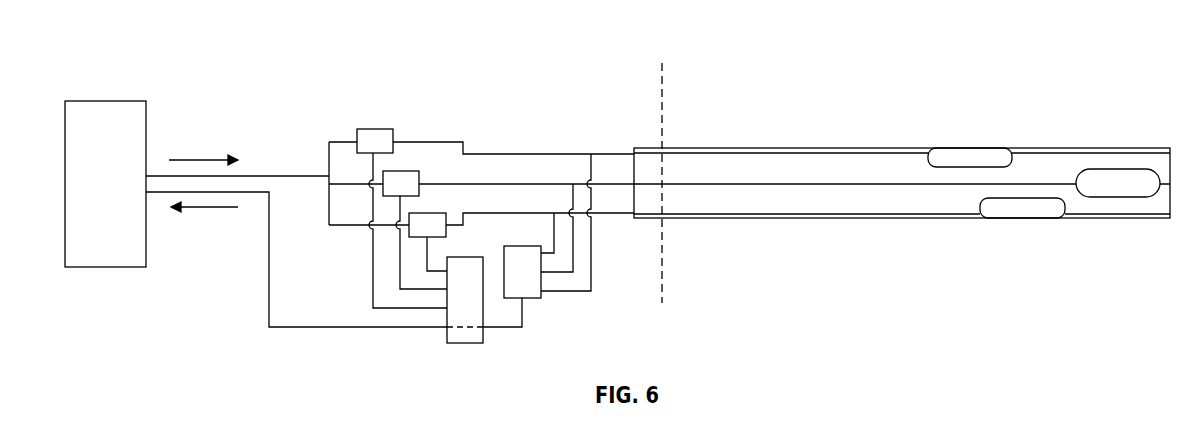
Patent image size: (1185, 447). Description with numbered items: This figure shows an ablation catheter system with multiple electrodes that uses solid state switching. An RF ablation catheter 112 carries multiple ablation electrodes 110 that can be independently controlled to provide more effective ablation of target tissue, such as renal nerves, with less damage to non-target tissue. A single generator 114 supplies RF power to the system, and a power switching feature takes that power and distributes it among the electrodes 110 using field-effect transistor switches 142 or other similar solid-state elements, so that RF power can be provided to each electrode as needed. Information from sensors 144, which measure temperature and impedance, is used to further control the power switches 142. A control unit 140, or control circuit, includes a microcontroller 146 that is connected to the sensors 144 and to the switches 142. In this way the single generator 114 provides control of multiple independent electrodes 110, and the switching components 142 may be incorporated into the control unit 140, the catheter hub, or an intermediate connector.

The ablation electrodes 110 is at (970, 157).
The RF ablation catheter 112 is at (1170, 228).
The generator 114 is at (103, 268).
The control unit 140 is at (481, 200).
The field-effect transistor switches 142 is at (373, 129).
The sensors 144 is at (530, 300).
The microcontroller 146 is at (444, 337).